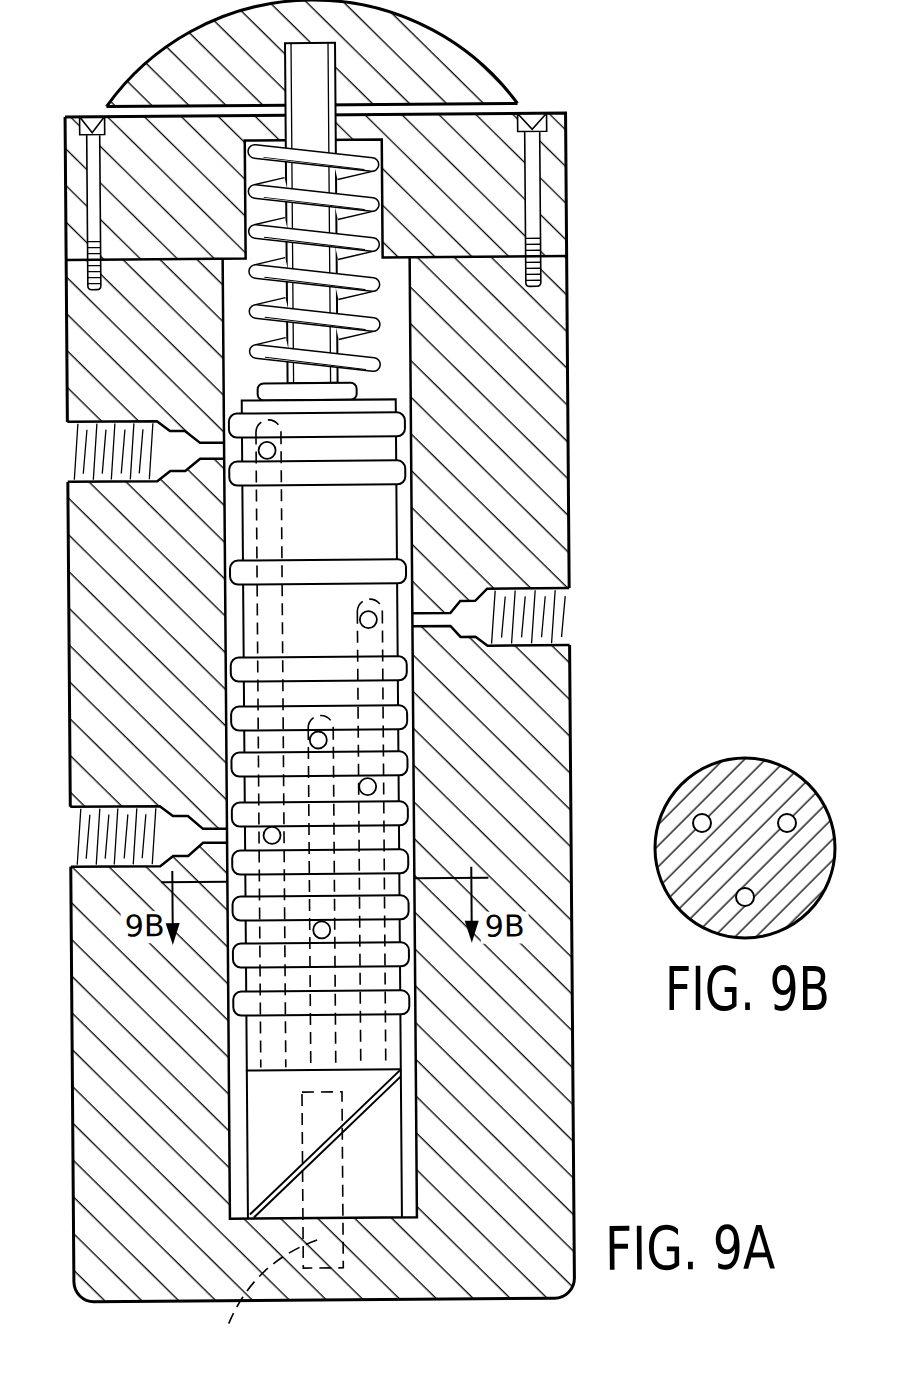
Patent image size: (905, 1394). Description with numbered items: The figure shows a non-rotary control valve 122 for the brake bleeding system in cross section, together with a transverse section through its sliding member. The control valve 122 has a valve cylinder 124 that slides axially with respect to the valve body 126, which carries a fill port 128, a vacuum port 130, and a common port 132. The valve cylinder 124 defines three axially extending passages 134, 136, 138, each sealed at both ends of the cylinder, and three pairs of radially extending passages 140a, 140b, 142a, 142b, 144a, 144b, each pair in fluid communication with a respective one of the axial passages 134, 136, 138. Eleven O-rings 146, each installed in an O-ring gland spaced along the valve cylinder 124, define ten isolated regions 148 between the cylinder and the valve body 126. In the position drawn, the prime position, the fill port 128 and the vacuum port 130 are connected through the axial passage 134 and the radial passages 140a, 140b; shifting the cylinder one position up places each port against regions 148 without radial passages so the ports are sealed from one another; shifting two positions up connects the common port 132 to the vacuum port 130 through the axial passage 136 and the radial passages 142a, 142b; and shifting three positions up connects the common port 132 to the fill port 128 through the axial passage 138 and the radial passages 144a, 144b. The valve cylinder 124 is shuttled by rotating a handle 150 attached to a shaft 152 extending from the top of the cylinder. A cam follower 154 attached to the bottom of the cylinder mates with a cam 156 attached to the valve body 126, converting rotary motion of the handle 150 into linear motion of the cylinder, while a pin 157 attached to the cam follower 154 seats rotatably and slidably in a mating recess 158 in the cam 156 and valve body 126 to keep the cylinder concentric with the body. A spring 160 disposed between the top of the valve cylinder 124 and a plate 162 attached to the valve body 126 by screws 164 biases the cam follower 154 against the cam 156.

In FIG. 9A, the control valve 122 is at (622, 44).
In FIG. 9A, the valve cylinder 124 is at (342, 536).
In FIG. 9B, the valve cylinder 124 is at (743, 758).
In FIG. 9A, the valve body 126 is at (166, 609).
In FIG. 9A, the fill port 128 is at (90, 452).
In FIG. 9A, the vacuum port 130 is at (88, 838).
In FIG. 9A, the common port 132 is at (566, 622).
In FIG. 9A, the axial passage 134 is at (270, 604).
In FIG. 9B, the axial passage 134 is at (698, 822).
In FIG. 9A, the axial passage 136 is at (333, 1036).
In FIG. 9B, the axial passage 136 is at (752, 902).
In FIG. 9A, the axial passage 138 is at (370, 693).
In FIG. 9B, the axial passage 138 is at (795, 823).
In FIG. 9A, the radially extending passage 140a is at (269, 441).
In FIG. 9A, the radially extending passage 140b is at (262, 835).
In FIG. 9A, the radially extending passage 142a is at (327, 741).
In FIG. 9A, the radially extending passage 142b is at (312, 930).
In FIG. 9A, the radially extending passage 144a is at (362, 626).
In FIG. 9A, the radially extending passage 144b is at (376, 788).
In FIG. 9A, the O-rings 146 is at (232, 572).
In FIG. 9A, the isolated regions 148 is at (418, 525).
In FIG. 9A, the handle 150 is at (415, 77).
In FIG. 9A, the shaft 152 is at (340, 98).
In FIG. 9A, the cam follower 154 is at (289, 1122).
In FIG. 9A, the cam 156 is at (390, 1185).
In FIG. 9A, the pin 157 is at (258, 1301).
In FIG. 9A, the mating recess 158 is at (329, 1276).
In FIG. 9A, the spring 160 is at (378, 327).
In FIG. 9A, the plate 162 is at (466, 205).
In FIG. 9A, the screws 164 is at (97, 115).